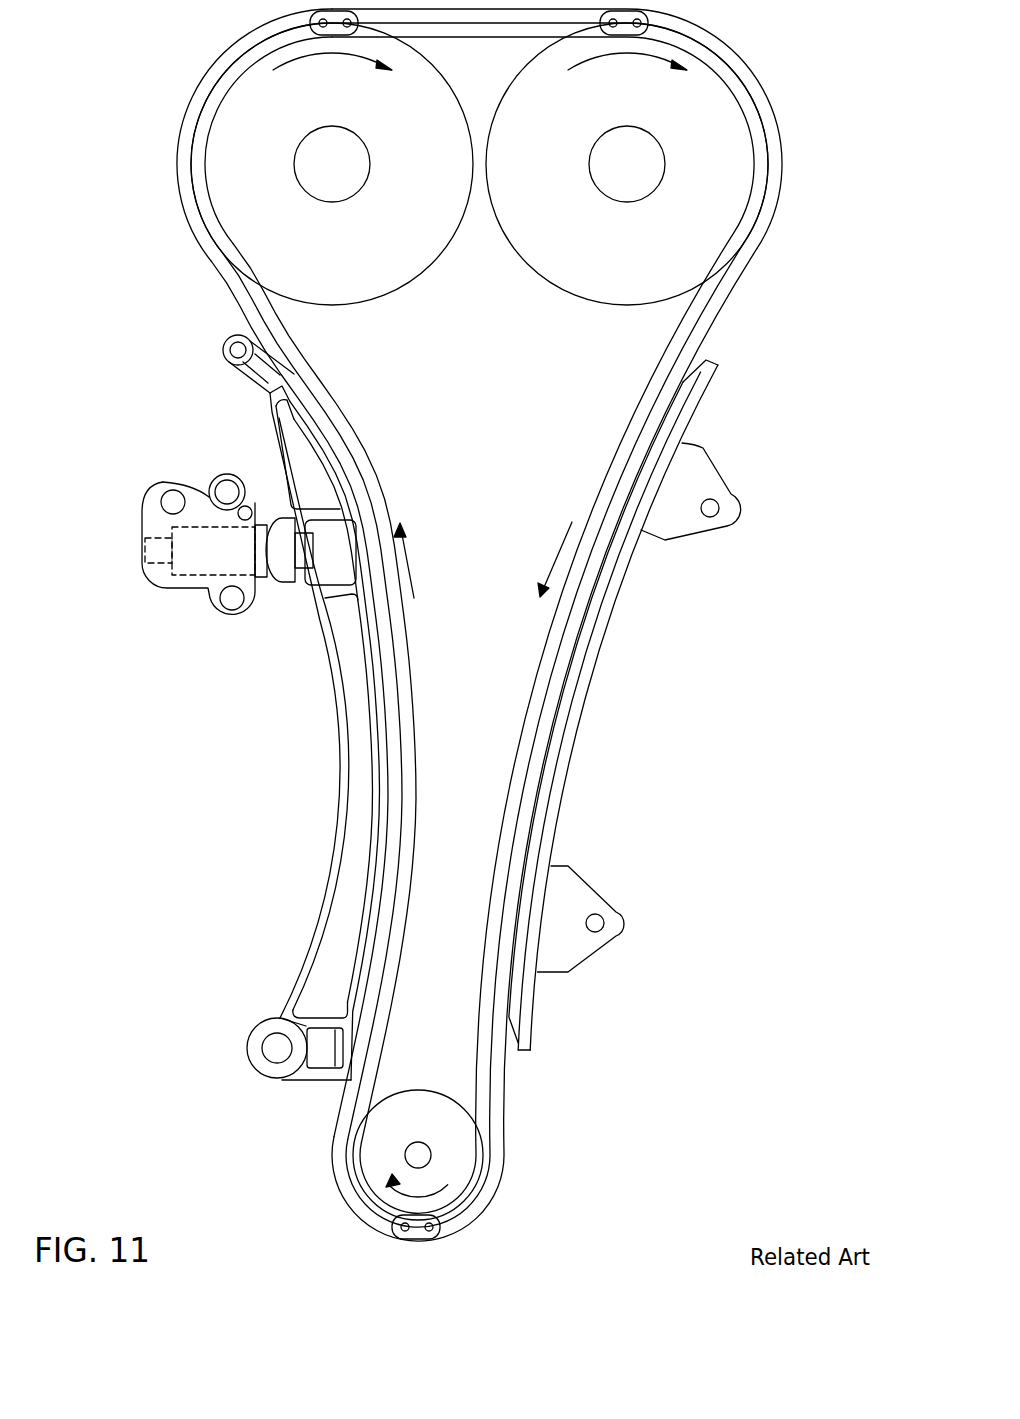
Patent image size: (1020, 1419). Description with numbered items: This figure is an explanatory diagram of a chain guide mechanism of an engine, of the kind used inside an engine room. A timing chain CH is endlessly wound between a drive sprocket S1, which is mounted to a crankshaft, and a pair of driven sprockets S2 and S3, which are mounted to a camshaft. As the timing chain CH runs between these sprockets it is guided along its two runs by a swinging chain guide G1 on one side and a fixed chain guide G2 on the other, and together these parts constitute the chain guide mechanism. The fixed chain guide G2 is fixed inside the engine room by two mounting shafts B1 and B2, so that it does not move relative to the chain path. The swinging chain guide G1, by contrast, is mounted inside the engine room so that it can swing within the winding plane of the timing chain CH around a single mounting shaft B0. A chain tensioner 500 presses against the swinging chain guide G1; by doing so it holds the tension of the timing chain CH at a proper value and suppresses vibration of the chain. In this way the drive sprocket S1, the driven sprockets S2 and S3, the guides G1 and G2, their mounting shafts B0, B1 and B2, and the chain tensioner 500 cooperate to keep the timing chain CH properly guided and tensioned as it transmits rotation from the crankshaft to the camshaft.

The timing chain CH is at (705, 312).
The drive sprocket S1 is at (455, 1153).
The driven sprocket S2 is at (240, 157).
The driven sprocket S3 is at (705, 150).
The swinging chain guide G1 is at (348, 925).
The fixed chain guide G2 is at (568, 763).
The mounting shaft B0 is at (278, 1048).
The mounting shaft B1 is at (716, 508).
The mounting shaft B2 is at (602, 923).
The chain tensioner 500 is at (156, 512).